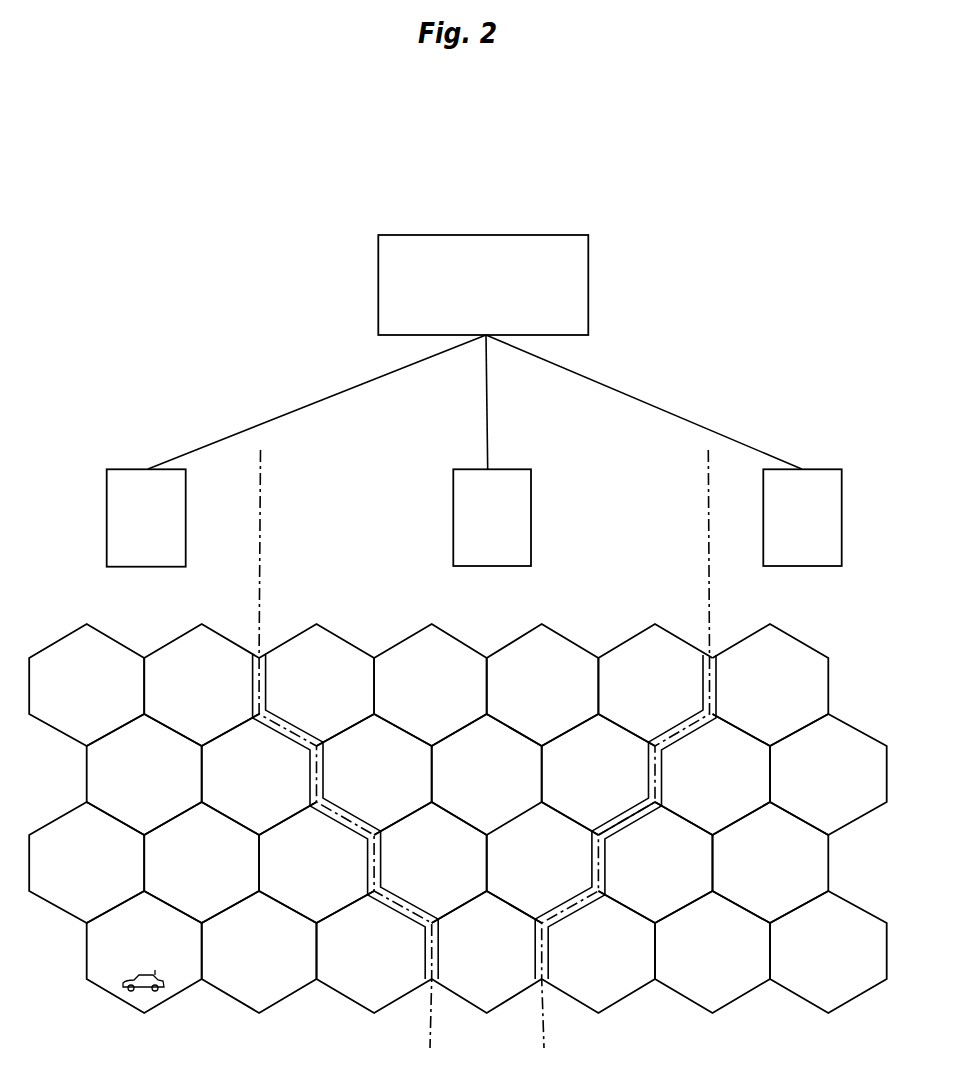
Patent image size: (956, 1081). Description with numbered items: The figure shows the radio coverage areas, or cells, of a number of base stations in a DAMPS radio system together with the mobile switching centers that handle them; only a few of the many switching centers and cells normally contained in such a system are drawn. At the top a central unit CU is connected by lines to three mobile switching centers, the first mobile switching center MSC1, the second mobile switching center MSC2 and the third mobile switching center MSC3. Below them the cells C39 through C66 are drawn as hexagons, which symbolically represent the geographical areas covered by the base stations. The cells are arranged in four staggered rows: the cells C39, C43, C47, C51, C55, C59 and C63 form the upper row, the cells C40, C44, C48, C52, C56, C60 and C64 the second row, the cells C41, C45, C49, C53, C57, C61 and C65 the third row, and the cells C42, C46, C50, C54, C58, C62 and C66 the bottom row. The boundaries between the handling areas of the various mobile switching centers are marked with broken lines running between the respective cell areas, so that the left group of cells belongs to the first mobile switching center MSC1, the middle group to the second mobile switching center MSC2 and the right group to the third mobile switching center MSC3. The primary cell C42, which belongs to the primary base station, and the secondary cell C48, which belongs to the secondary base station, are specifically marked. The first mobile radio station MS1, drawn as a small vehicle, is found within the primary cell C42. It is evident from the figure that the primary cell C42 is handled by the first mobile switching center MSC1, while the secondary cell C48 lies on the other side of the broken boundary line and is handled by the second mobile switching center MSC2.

The central unit CU is at (483, 285).
The first mobile switching center MSC1 is at (146, 517).
The second mobile switching center MSC2 is at (492, 517).
The third mobile switching center MSC3 is at (802, 517).
The first mobile radio station MS1 is at (165, 985).
The cell C39 is at (86, 685).
The cell C40 is at (144, 774).
The cell C41 is at (86, 862).
The primary cell C42 is at (144, 952).
The cell C43 is at (201, 685).
The cell C44 is at (259, 774).
The cell C45 is at (201, 862).
The cell C46 is at (259, 952).
The cell C47 is at (316, 685).
The secondary cell C48 is at (374, 774).
The cell C49 is at (316, 862).
The cell C50 is at (374, 952).
The cell C51 is at (430, 685).
The cell C52 is at (487, 774).
The cell C53 is at (430, 862).
The cell C54 is at (487, 952).
The cell C55 is at (543, 685).
The cell C56 is at (598, 774).
The cell C57 is at (543, 862).
The cell C58 is at (598, 952).
The cell C59 is at (655, 685).
The cell C60 is at (712, 774).
The cell C61 is at (655, 862).
The cell C62 is at (712, 952).
The cell C63 is at (771, 685).
The cell C64 is at (828, 774).
The cell C65 is at (771, 862).
The cell C66 is at (828, 952).